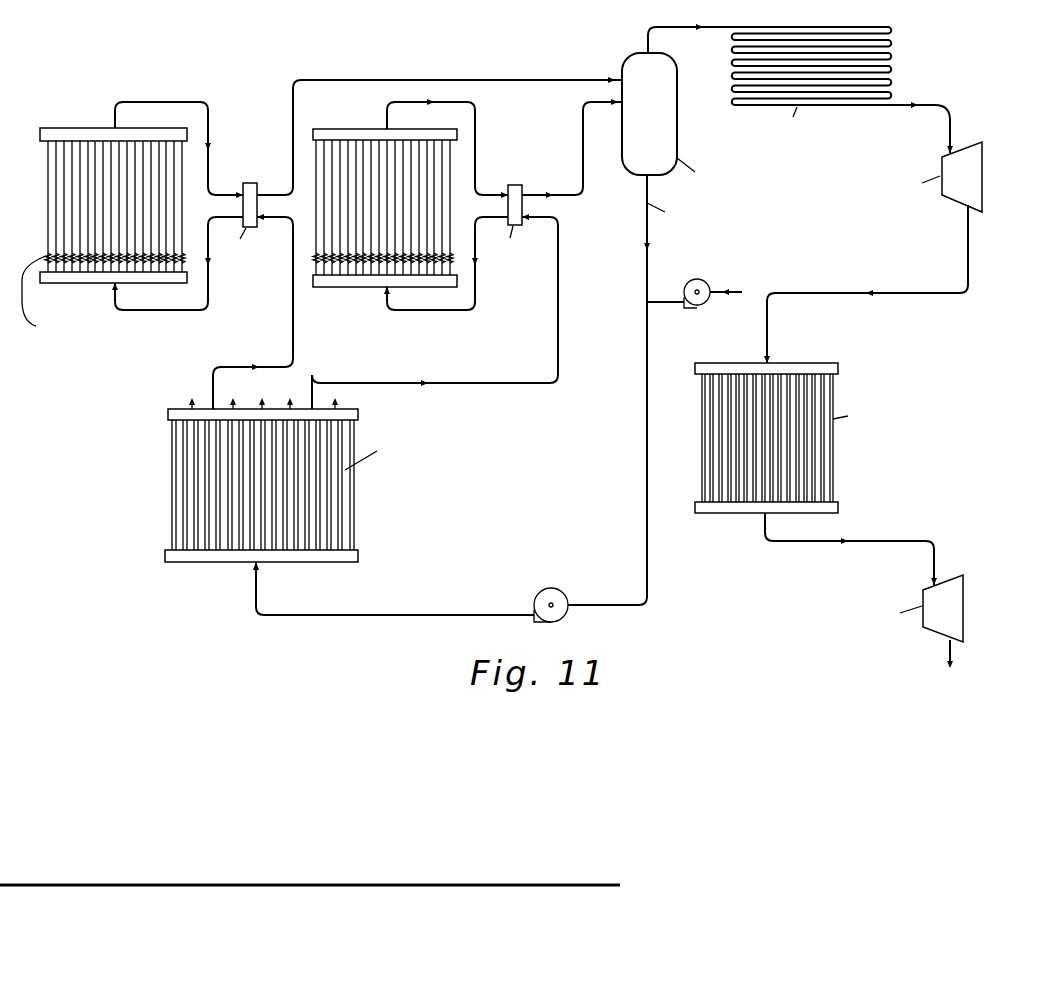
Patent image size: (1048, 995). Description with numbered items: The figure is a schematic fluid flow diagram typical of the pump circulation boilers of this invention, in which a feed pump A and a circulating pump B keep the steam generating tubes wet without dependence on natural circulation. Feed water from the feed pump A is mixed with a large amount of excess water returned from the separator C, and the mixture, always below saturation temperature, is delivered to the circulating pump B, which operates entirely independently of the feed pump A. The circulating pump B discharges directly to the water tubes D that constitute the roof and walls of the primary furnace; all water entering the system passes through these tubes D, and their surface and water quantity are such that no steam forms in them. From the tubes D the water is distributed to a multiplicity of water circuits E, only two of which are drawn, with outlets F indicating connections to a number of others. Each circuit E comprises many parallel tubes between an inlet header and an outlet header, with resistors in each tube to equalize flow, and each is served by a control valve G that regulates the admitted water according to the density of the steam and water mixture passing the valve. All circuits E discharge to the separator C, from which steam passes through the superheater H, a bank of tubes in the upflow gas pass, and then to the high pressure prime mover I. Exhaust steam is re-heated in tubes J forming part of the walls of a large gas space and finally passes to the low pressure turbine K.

The feed pump A is at (704, 281).
The circulating pump B is at (552, 588).
The separator C is at (677, 115).
The water tubes D is at (170, 486).
The water circuits E is at (45, 200).
The outlets F is at (190, 400).
The control valve G is at (250, 183).
The superheater H is at (890, 67).
The prime mover I is at (982, 169).
The re-heating tubes J is at (832, 461).
The low pressure turbine K is at (963, 604).